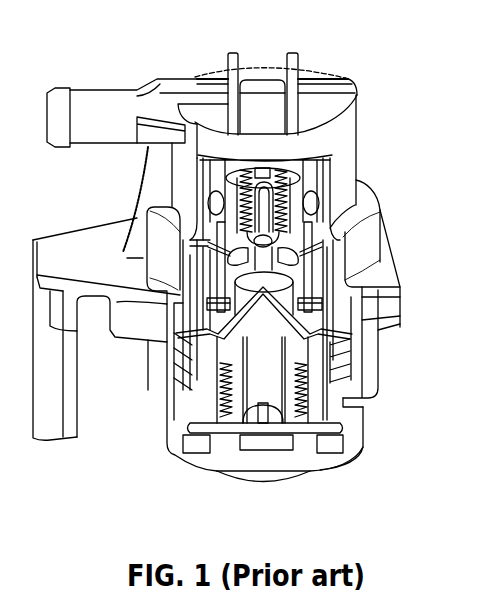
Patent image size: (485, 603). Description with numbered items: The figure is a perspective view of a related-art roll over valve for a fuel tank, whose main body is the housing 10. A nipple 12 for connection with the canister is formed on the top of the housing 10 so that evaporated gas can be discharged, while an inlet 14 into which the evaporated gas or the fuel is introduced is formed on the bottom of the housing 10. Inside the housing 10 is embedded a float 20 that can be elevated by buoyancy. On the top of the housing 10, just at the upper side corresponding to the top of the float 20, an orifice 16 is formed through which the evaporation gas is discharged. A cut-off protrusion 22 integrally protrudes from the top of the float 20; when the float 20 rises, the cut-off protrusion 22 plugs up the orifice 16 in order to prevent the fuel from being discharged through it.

The housing 10 is at (180, 388).
The nipple 12 is at (95, 97).
The inlet 14 is at (263, 392).
The orifice 16 is at (263, 248).
The float 20 is at (198, 396).
The cut-off protrusion 22 is at (266, 293).